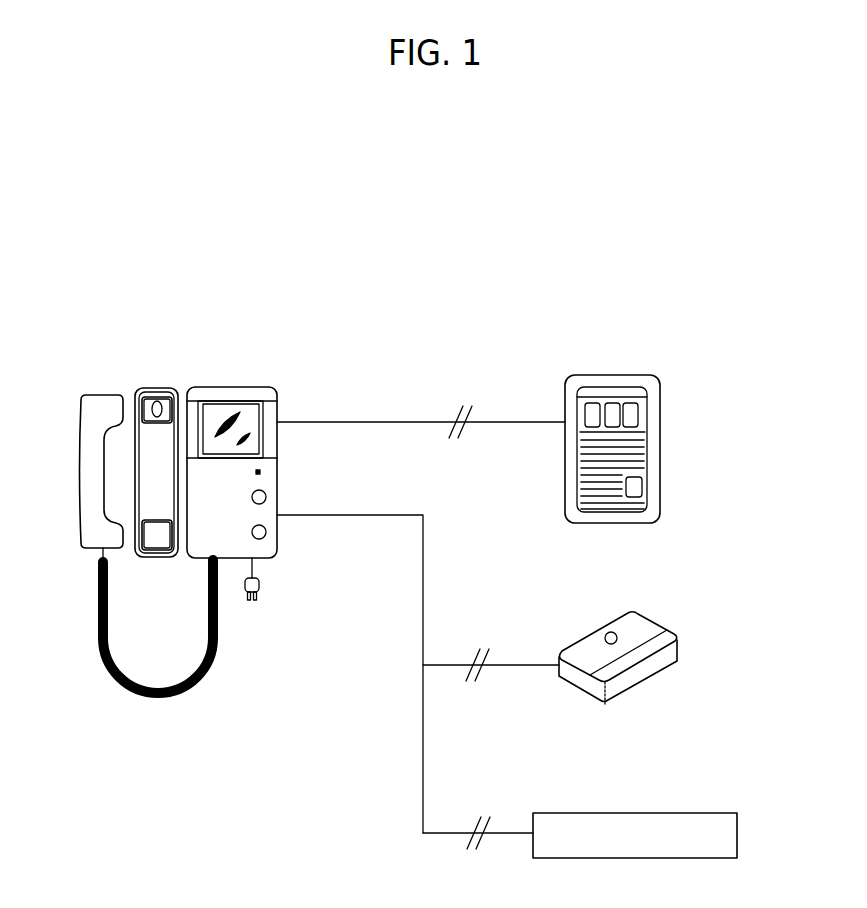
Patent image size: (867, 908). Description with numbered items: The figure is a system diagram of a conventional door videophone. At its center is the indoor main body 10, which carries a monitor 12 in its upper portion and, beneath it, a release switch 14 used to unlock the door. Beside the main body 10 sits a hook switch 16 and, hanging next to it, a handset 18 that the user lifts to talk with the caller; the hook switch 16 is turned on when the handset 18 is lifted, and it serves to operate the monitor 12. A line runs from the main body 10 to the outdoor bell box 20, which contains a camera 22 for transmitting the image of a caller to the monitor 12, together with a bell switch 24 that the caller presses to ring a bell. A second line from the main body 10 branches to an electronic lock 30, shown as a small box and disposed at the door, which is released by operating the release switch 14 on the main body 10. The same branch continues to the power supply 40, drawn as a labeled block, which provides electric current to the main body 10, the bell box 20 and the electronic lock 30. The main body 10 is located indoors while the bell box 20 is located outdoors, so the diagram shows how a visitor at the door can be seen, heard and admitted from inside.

The main body 10 is at (286, 375).
The monitor 12 is at (227, 410).
The release switch 14 is at (262, 536).
The hook switch 16 is at (158, 400).
The handset 18 is at (98, 407).
The bell box 20 is at (670, 467).
The camera 22 is at (617, 396).
The bell switch 24 is at (637, 493).
The electronic lock 30 is at (688, 648).
The power supply 40 is at (707, 813).